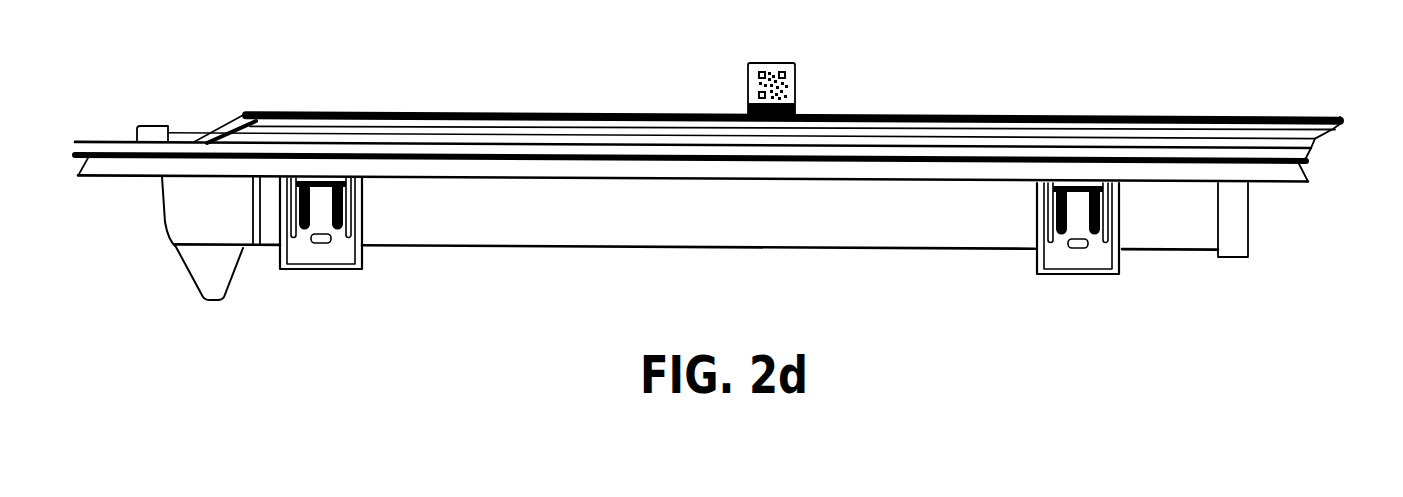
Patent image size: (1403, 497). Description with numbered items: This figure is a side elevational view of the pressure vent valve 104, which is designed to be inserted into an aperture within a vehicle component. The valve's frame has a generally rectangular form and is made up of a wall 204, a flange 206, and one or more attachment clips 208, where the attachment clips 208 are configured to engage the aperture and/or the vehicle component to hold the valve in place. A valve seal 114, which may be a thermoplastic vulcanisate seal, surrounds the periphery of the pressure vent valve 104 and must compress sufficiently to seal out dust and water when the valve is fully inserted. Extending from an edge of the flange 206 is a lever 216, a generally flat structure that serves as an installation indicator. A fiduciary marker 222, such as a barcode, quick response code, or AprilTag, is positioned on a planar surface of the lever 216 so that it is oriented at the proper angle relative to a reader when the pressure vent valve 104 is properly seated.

The pressure vent valve 104 is at (187, 69).
The valve seal 114 is at (127, 179).
The wall 204 is at (521, 248).
The flange 206 is at (1333, 116).
The attachment clips 208 is at (327, 270).
The lever 216 is at (798, 78).
The fiduciary marker 222 is at (751, 88).